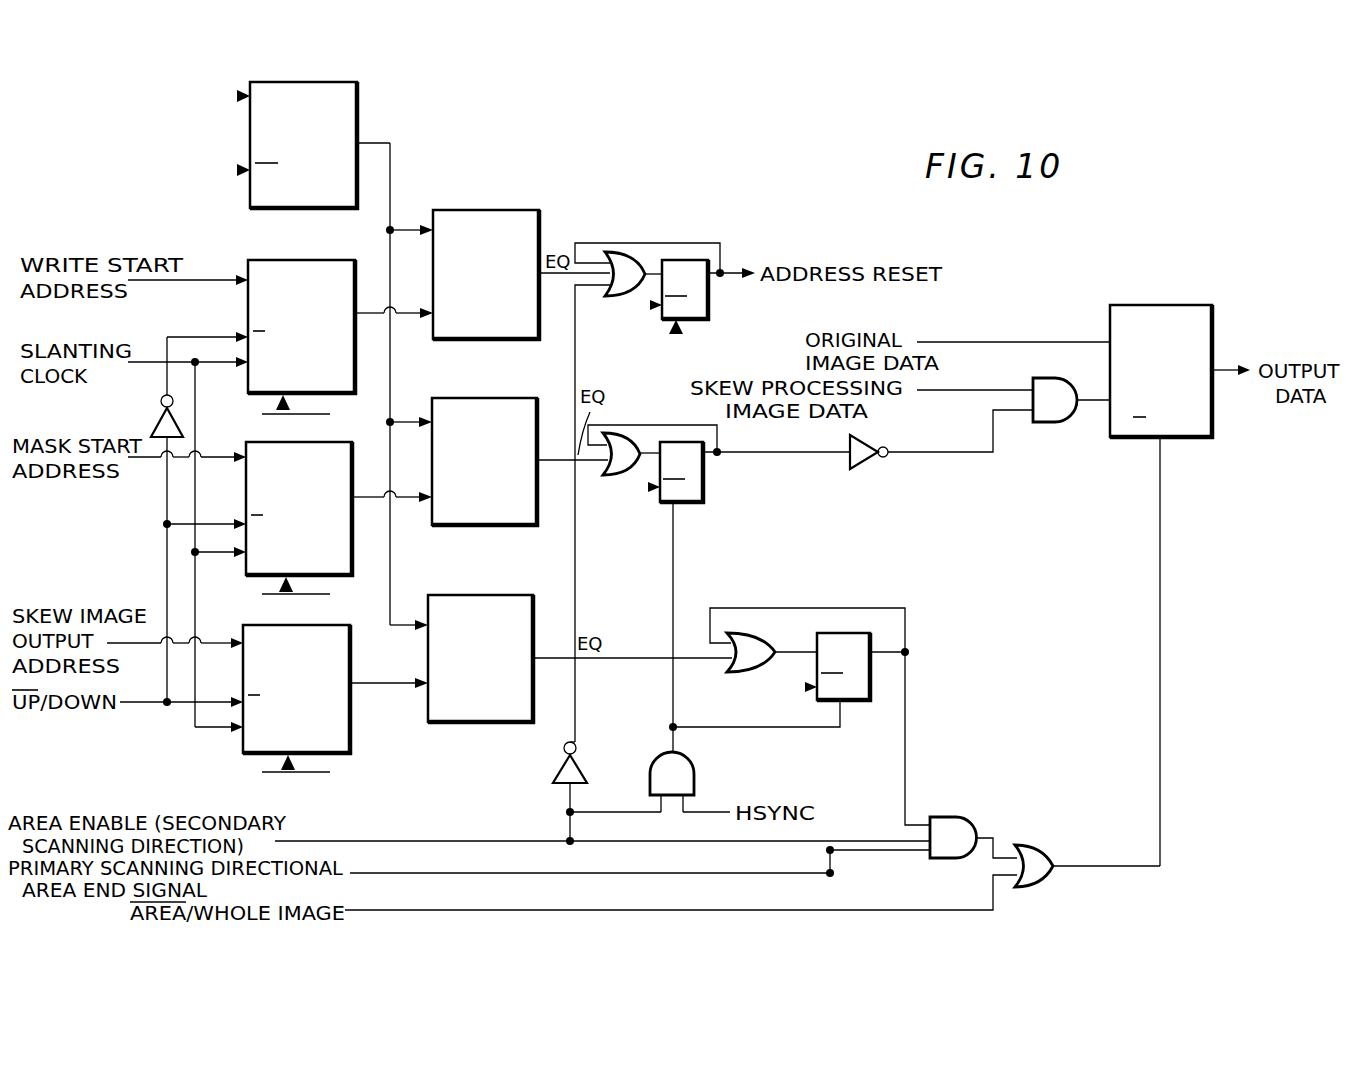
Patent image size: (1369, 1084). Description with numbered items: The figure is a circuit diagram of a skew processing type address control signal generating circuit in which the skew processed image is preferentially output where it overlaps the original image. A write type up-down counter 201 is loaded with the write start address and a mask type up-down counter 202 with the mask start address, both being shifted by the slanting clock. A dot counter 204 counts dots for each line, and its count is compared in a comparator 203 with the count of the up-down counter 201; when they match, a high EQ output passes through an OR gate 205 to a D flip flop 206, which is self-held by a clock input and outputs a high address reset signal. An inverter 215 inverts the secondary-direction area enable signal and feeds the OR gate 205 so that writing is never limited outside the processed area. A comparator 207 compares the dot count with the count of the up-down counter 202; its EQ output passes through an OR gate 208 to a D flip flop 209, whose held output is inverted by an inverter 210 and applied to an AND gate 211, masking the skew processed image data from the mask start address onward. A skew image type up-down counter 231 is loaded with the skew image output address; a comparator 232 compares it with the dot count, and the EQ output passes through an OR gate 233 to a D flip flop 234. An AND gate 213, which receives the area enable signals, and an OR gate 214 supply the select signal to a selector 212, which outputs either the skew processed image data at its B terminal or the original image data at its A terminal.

The write type up-down counter 201 is at (273, 260).
The mask type up-down counter 202 is at (247, 455).
The comparator 203 is at (507, 210).
The dot counter 204 is at (358, 106).
The OR gate 205 is at (612, 297).
The D flip flop 206 is at (706, 318).
The comparator 207 is at (466, 397).
The OR gate 208 is at (618, 484).
The D flip flop 209 is at (687, 503).
The inverter 210 is at (868, 456).
The AND gate 211 is at (1053, 423).
The selector 212 is at (1185, 438).
The AND gate 213 is at (940, 815).
The OR gate 214 is at (1040, 845).
The inverter 215 is at (578, 767).
The skew image type up-down counter 231 is at (352, 662).
The comparator 232 is at (462, 594).
The OR gate 233 is at (742, 673).
The D flip flop 234 is at (872, 683).